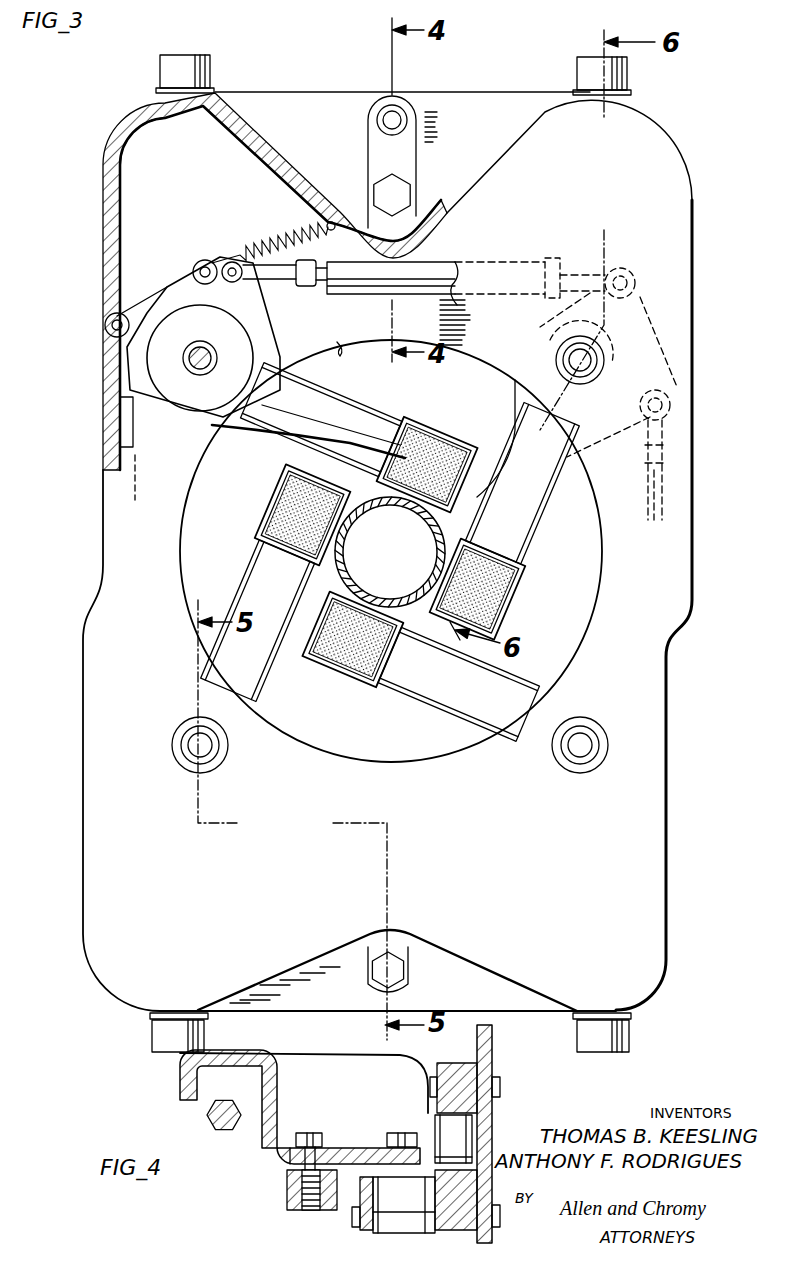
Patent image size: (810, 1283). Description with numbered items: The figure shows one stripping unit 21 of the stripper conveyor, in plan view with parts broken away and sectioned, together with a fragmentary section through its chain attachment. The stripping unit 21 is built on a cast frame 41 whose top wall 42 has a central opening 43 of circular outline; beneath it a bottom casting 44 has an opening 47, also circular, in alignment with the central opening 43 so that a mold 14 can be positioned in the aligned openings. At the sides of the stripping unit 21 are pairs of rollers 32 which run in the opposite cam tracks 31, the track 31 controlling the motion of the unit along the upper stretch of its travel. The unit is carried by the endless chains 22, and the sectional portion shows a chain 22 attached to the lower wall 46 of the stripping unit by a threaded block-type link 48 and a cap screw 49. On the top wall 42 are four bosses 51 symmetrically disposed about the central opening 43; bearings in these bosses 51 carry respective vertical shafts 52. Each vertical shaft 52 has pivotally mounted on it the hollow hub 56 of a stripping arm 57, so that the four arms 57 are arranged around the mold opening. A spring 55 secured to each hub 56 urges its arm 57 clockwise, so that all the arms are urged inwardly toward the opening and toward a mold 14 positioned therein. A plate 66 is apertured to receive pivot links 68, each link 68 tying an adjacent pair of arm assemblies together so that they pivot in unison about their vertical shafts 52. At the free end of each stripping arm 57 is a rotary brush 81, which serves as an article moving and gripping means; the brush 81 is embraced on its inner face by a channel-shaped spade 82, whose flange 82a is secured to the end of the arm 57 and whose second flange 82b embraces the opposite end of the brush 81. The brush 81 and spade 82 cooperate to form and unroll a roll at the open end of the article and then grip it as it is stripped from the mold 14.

In FIG. 3, the mold 14 is at (430, 532).
In FIG. 3, the stripping unit 21 is at (676, 893).
In FIG. 4, the stripping unit 21 is at (305, 1052).
In FIG. 4, the endless chain 22 is at (290, 1200).
In FIG. 4, the track 31 is at (493, 1108).
In FIG. 3, the roller 32 is at (210, 66).
In FIG. 4, the roller 32 is at (455, 1140).
In FIG. 3, the cast frame 41 is at (668, 759).
In FIG. 3, the top wall 42 is at (501, 894).
In FIG. 3, the central opening 43 is at (393, 760).
In FIG. 3, the bottom casting 44 is at (208, 428).
In FIG. 4, the lower wall 46 is at (355, 1148).
In FIG. 3, the opening 47 is at (346, 350).
In FIG. 4, the threaded block-type link 48 is at (288, 1190).
In FIG. 3, the cap screw 49 is at (398, 202).
In FIG. 4, the cap screw 49 is at (310, 1132).
In FIG. 3, the boss 51 is at (208, 758).
In FIG. 3, the vertical shaft 52 is at (214, 362).
In FIG. 3, the spring 55 is at (290, 238).
In FIG. 3, the hollow hub 56 is at (272, 345).
In FIG. 3, the stripping arm 57 is at (345, 396).
In FIG. 3, the plate 66 is at (148, 290).
In FIG. 3, the pivot link 68 is at (258, 284).
In FIG. 3, the rotary brush 81 is at (432, 437).
In FIG. 3, the spade 82 is at (412, 630).
In FIG. 3, the flange 82a is at (478, 560).
In FIG. 3, the flange 82b is at (306, 650).